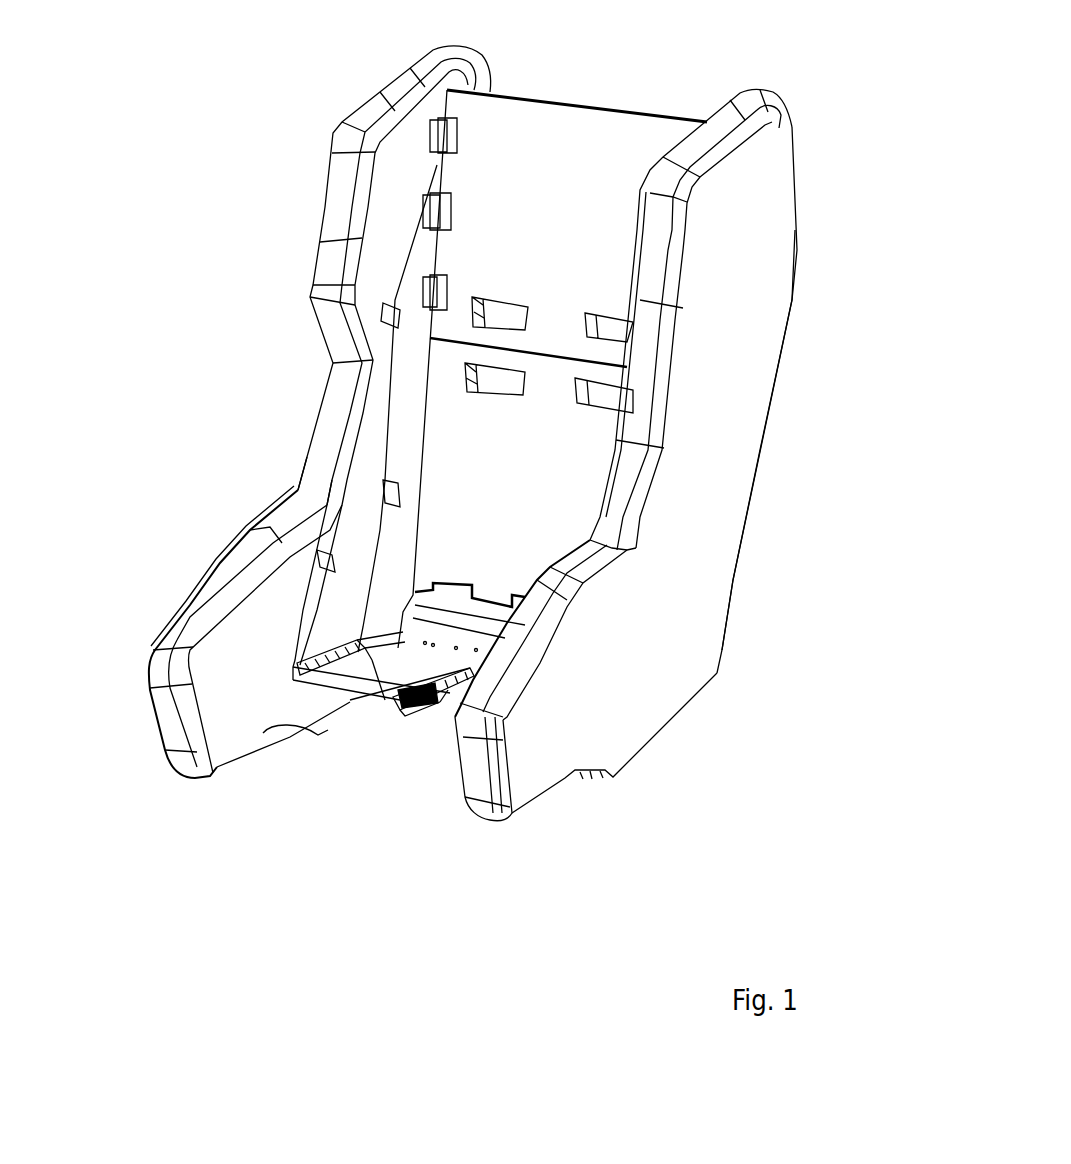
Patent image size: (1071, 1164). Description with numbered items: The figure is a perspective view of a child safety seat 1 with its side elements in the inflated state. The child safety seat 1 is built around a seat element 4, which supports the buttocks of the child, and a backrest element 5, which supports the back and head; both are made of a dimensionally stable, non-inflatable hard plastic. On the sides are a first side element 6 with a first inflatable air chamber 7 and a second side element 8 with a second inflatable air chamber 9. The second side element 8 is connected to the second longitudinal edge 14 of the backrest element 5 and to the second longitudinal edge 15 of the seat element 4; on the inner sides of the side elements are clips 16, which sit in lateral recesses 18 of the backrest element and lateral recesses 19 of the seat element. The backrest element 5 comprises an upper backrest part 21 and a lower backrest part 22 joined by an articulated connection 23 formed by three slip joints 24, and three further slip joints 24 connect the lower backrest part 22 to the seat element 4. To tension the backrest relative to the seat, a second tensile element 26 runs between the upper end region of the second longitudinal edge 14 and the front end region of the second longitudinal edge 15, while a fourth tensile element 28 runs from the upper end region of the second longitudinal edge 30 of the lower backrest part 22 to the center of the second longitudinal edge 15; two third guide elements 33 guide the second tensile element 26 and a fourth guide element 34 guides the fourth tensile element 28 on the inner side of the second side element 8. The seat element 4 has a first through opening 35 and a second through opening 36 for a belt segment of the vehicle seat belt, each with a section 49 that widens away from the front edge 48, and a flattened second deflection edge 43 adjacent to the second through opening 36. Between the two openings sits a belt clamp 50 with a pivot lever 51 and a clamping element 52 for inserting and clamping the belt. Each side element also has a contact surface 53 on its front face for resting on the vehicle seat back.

The child safety seat 1 is at (793, 196).
The seat element 4 is at (452, 720).
The backrest element 5 is at (612, 104).
The first side element 6 is at (757, 418).
The first inflatable air chamber 7 is at (708, 523).
The second side element 8 is at (342, 200).
The second inflatable air chamber 9 is at (190, 638).
The second longitudinal edge of backrest element 14 is at (430, 250).
The second longitudinal edge of seat element 15 is at (293, 672).
The clips 16 is at (355, 664).
The lateral recesses of the backrest element 18 is at (440, 195).
The lateral recesses of the seat element 19 is at (293, 663).
The upper backrest part 21 is at (545, 122).
The lower backrest part 22 is at (557, 497).
The articulated connection 23 is at (625, 333).
The slip joints 24 is at (620, 362).
The second tensile element 26 is at (318, 468).
The fourth tensile element 28 is at (328, 594).
The second longitudinal edge of lower backrest part 30 is at (428, 450).
The third guide elements 33 is at (383, 313).
The fourth guide element 34 is at (383, 495).
The first through opening 35 is at (532, 690).
The second through opening 36 is at (615, 785).
The second deflection edge 43 is at (340, 705).
The front edge of the seat element 48 is at (325, 700).
The widening section 49 is at (303, 690).
The belt clamp 50 is at (414, 705).
The pivot lever 51 is at (425, 706).
The clamping element 52 is at (437, 706).
The contact surface 53 is at (480, 773).